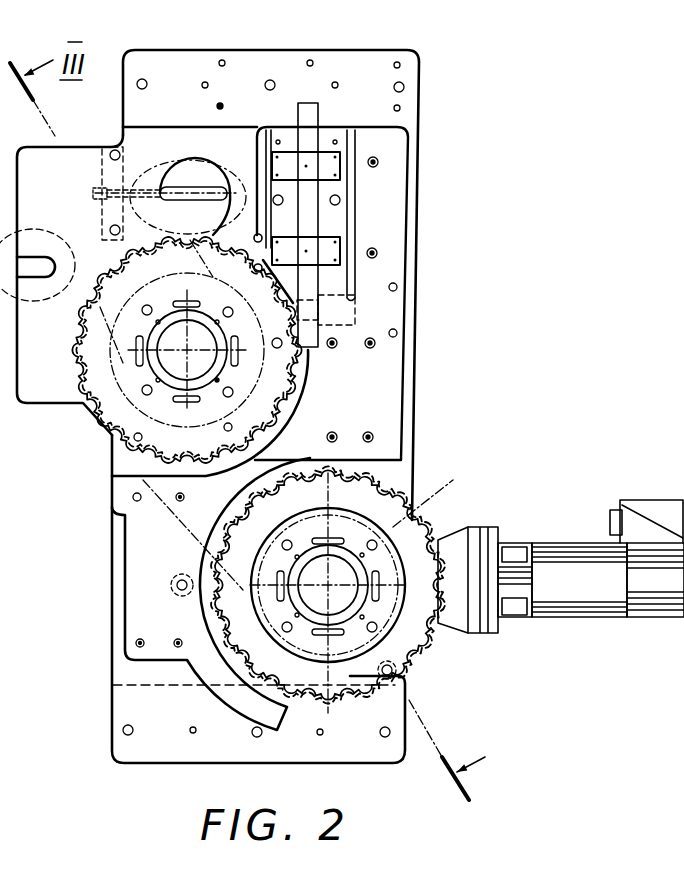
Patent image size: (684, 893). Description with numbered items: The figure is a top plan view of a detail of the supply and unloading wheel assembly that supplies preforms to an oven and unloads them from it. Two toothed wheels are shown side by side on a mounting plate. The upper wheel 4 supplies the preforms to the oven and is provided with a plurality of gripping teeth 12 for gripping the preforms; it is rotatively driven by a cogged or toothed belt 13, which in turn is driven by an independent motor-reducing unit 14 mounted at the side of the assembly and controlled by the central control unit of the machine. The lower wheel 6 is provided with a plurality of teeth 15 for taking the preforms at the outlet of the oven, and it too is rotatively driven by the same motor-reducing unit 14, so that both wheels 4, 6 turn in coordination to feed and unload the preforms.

The wheel 4 is at (272, 318).
The wheel 6 is at (394, 527).
The gripping teeth 12 is at (213, 232).
The cogged or toothed belt 13 is at (342, 417).
The motor-reducing unit 14 is at (560, 610).
The teeth 15 is at (230, 645).